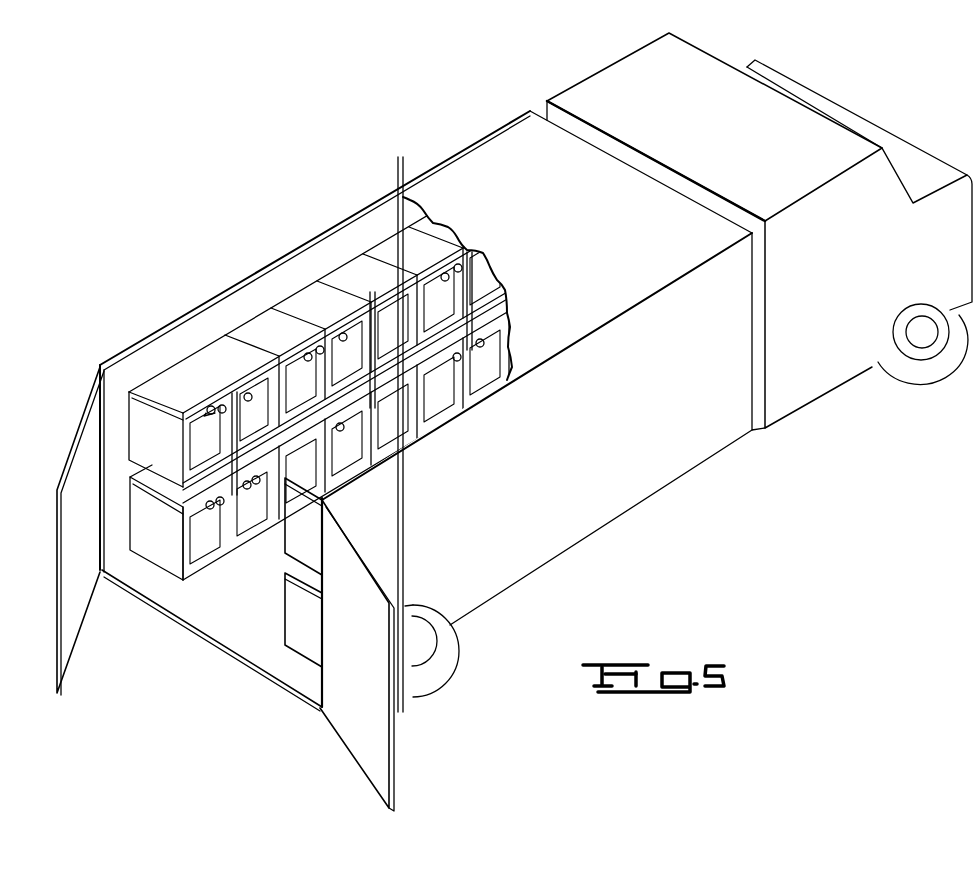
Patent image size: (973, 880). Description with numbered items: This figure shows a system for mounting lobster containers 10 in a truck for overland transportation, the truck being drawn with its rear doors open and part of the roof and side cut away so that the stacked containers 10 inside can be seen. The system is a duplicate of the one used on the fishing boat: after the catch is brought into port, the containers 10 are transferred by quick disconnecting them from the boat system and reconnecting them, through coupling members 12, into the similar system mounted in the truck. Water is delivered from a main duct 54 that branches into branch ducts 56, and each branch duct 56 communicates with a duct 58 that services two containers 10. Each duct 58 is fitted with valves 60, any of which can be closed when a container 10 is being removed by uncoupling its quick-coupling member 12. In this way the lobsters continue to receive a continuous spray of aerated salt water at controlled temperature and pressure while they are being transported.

The container 10 is at (289, 419).
The coupling member 12 is at (319, 445).
The main duct 54 is at (308, 413).
The branch duct 56 is at (248, 401).
The duct 58 is at (339, 336).
The valve 60 is at (211, 406).